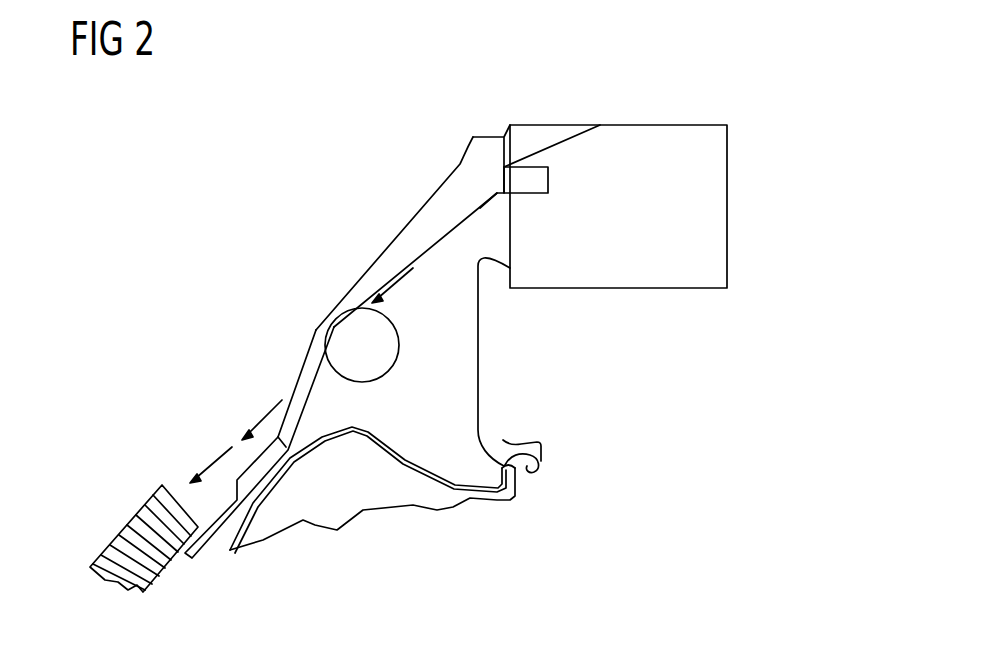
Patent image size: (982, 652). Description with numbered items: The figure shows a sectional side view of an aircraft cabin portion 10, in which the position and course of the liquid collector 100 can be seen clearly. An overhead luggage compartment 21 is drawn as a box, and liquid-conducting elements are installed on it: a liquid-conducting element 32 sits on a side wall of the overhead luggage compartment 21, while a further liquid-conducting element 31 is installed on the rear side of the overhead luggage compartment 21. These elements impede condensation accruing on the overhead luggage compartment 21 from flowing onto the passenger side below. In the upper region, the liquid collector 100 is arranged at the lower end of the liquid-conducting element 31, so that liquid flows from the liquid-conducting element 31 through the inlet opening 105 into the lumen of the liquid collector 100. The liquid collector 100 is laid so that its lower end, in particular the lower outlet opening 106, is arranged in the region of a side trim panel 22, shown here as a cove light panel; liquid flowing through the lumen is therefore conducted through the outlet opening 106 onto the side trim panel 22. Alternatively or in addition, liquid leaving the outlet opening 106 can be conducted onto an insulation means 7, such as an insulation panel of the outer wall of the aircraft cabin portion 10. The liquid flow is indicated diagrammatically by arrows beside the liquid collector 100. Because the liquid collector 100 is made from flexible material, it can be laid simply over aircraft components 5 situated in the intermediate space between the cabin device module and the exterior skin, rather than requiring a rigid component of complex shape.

The aircraft cabin portion 10 is at (745, 117).
The overhead luggage compartment 21 is at (718, 192).
The side trim panel 22 is at (453, 490).
The liquid-conducting element 31 is at (532, 178).
The liquid-conducting element 32 is at (568, 132).
The inlet opening 105 is at (490, 148).
The liquid collector 100 is at (428, 215).
The outlet opening 106 is at (277, 430).
The aircraft components 5 is at (345, 323).
The insulation means 7 is at (113, 545).